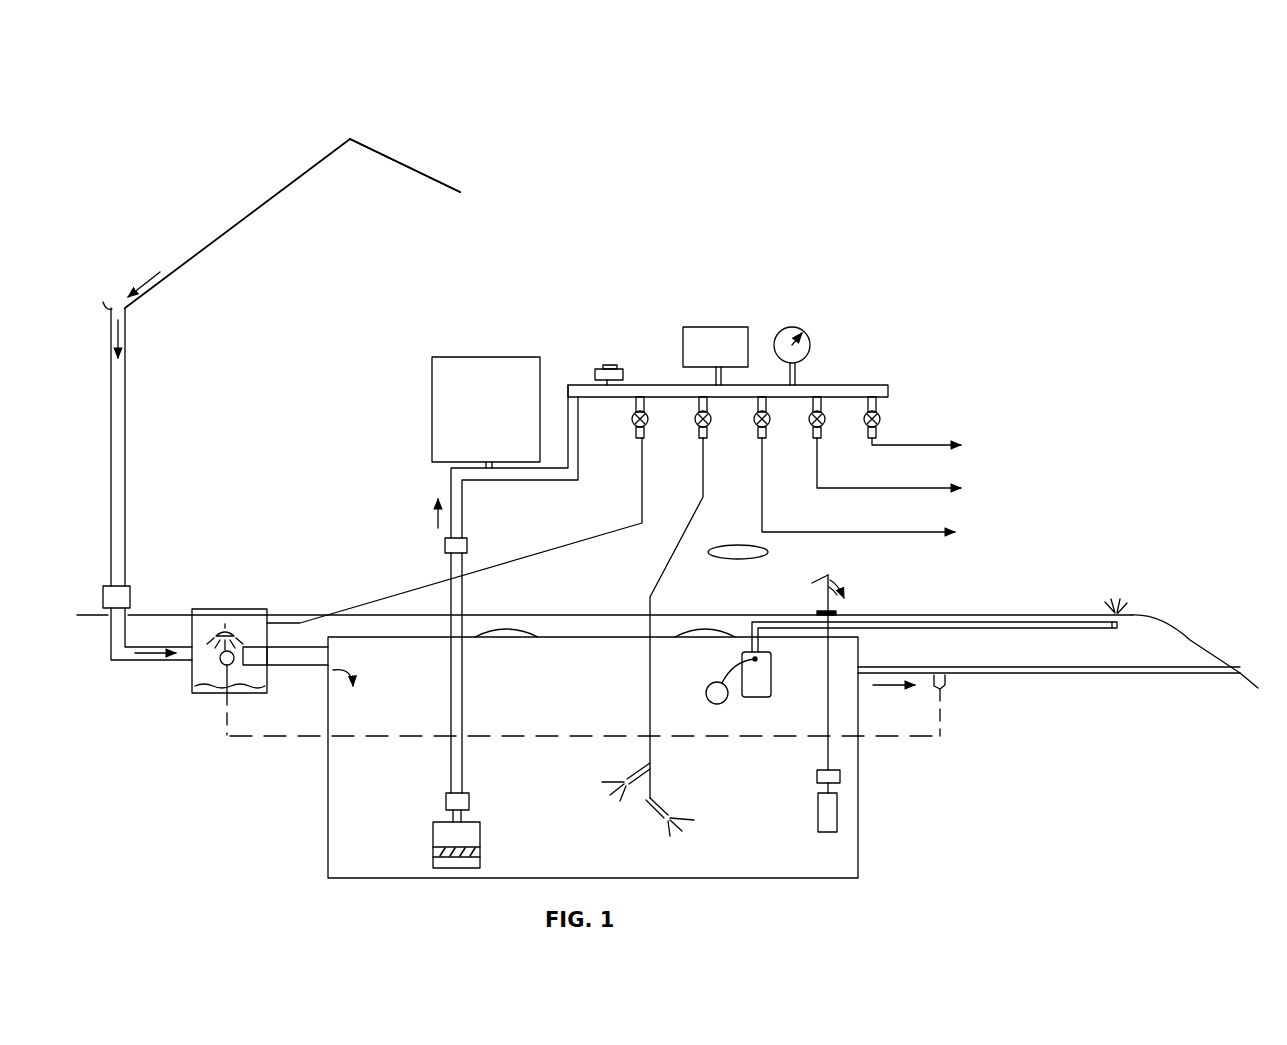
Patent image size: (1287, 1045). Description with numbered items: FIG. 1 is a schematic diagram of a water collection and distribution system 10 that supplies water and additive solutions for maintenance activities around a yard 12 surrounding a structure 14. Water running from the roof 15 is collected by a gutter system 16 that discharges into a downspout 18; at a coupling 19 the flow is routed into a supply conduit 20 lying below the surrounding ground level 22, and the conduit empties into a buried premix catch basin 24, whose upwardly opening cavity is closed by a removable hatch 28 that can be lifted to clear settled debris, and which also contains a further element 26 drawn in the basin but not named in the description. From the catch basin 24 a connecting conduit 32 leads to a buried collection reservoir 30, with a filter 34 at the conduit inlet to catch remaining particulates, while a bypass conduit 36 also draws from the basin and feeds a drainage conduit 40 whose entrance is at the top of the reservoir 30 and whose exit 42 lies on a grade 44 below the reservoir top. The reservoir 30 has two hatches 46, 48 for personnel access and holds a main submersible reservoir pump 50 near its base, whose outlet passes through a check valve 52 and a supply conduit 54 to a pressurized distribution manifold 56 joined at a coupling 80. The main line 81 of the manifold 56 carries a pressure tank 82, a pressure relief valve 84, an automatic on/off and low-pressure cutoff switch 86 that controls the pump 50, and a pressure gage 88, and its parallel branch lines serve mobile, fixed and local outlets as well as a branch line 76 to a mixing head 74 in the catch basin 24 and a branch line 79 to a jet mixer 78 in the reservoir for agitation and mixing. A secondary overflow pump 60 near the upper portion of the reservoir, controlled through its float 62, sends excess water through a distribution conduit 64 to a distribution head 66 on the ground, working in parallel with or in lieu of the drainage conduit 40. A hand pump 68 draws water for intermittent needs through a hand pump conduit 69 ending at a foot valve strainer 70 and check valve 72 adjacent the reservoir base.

The water collection and distribution system 10 is at (1085, 805).
The yard 12 is at (604, 593).
The structure 14 is at (292, 223).
The roof 15 is at (218, 238).
The gutter system 16 is at (125, 310).
The downspout 18 is at (120, 404).
The coupling 19 is at (135, 584).
The supply conduit 20 is at (117, 662).
The ground level 22 is at (1195, 600).
The premix catch basin 24 is at (192, 673).
The float 26 is at (198, 693).
The hatch 28 is at (255, 610).
The collection reservoir 30 is at (858, 837).
The connecting conduit 32 is at (300, 662).
The filter 34 is at (258, 665).
The bypass conduit 36 is at (925, 736).
The drainage conduit 40 is at (1108, 675).
The exit 42 is at (1240, 668).
The grade 44 is at (1193, 637).
The hatch 46 is at (508, 633).
The hatch 48 is at (702, 630).
The reservoir pump 50 is at (433, 833).
The check valve 52 is at (469, 795).
The supply conduit 54 is at (462, 651).
The distribution manifold 56 is at (952, 236).
The overflow pump 60 is at (771, 675).
The float 62 is at (714, 682).
The distribution conduit 64 is at (1088, 627).
The distribution head 66 is at (1105, 608).
The hand pump 68 is at (833, 578).
The hand pump conduit 69 is at (828, 747).
The foot valve strainer 70 is at (818, 822).
The check valve 72 is at (817, 777).
The mixing head 74 is at (222, 628).
The branch line 76 is at (395, 597).
The jet mixer 78 is at (630, 773).
The branch line 79 is at (658, 577).
The coupling 80 is at (445, 542).
The main line 81 is at (453, 482).
The pressure tank 82 is at (430, 360).
The pressure relief valve 84 is at (595, 370).
The automatic on/off and low-pressure cutoff switch 86 is at (727, 323).
The pressure gage 88 is at (803, 328).